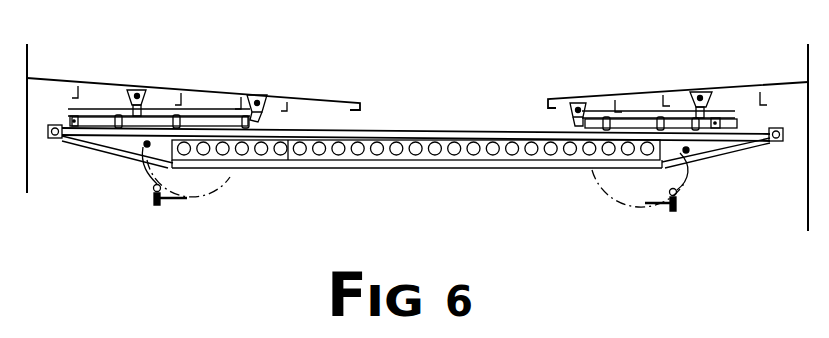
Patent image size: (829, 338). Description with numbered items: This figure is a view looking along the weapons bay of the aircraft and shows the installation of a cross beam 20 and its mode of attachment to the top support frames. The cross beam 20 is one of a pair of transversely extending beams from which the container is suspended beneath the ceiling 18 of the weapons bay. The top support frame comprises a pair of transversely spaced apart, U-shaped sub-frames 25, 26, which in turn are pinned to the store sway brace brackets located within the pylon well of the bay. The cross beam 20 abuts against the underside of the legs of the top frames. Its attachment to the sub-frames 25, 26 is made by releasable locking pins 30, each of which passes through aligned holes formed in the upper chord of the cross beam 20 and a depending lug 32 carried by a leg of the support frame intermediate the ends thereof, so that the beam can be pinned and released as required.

The ceiling 18 is at (345, 110).
The cross beam 20 is at (407, 167).
The U-shaped sub-frame 25 is at (720, 119).
The U-shaped sub-frame 26 is at (74, 112).
The releasable locking pin 30 is at (170, 202).
The depending lug 32 is at (187, 142).